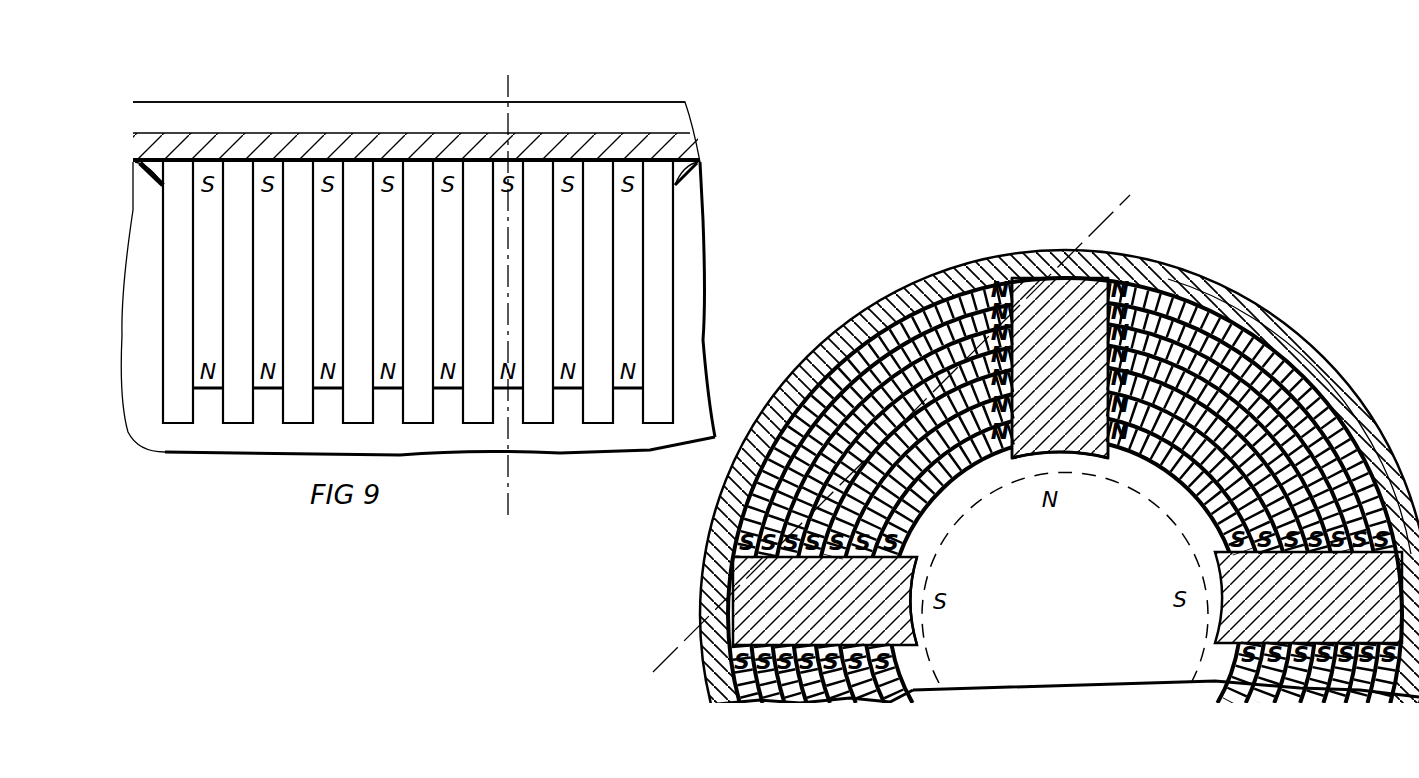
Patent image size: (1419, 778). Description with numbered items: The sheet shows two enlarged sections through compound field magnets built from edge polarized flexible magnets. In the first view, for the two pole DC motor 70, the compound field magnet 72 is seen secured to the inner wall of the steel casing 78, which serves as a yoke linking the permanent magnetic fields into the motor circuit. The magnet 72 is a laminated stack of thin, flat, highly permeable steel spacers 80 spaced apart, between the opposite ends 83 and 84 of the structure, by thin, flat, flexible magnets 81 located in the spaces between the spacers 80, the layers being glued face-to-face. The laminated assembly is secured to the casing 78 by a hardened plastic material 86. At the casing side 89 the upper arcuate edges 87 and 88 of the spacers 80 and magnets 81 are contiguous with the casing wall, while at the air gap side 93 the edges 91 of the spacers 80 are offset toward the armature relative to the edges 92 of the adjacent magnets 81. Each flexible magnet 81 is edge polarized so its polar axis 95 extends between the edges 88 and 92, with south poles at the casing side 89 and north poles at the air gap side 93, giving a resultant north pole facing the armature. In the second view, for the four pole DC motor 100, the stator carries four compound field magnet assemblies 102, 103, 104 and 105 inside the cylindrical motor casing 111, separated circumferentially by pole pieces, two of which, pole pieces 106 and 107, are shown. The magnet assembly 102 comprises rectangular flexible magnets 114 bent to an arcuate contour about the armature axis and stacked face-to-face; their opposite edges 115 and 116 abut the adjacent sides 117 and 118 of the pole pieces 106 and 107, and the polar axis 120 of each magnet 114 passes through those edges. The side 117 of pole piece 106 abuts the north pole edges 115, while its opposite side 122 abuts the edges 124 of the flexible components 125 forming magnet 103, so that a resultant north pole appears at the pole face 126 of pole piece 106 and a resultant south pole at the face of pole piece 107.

In FIG. 9, the two pole DC motor 70 is at (548, 102).
In FIG. 9, the compound field magnet 72 is at (674, 211).
In FIG. 9, the casing 78 is at (355, 102).
In FIG. 9, the spacers 80 is at (482, 423).
In FIG. 9, the flexible magnets 81 is at (627, 390).
In FIG. 9, the end 83 is at (163, 345).
In FIG. 9, the end 84 is at (674, 315).
In FIG. 9, the hardened plastic material 86 is at (152, 175).
In FIG. 9, the upper arcuate edge 87 is at (247, 161).
In FIG. 9, the upper arcuate edge 88 is at (340, 161).
In FIG. 9, the casing side 89 is at (398, 160).
In FIG. 9, the edge 91 is at (298, 425).
In FIG. 9, the edge 92 is at (393, 390).
In FIG. 9, the air gap side 93 is at (655, 423).
In FIG. 9, the polar axis 95 is at (512, 283).
In FIG. 12, the four pole DC motor 100 is at (1300, 328).
In FIG. 12, the compound field magnet assembly 102 is at (918, 520).
In FIG. 12, the compound field magnet assembly 103 is at (1195, 498).
In FIG. 12, the compound field magnet assembly 104 is at (1214, 665).
In FIG. 12, the compound field magnet assembly 105 is at (915, 672).
In FIG. 12, the pole piece 106 is at (993, 476).
In FIG. 12, the pole piece 107 is at (932, 600).
In FIG. 12, the motor casing 111 is at (1178, 268).
In FIG. 12, the flexible magnets 114 is at (726, 522).
In FIG. 12, the edge 115 is at (1043, 252).
In FIG. 12, the edge 116 is at (712, 578).
In FIG. 12, the side 117 is at (1008, 460).
In FIG. 12, the side 118 is at (908, 556).
In FIG. 12, the polar axis 120 is at (696, 630).
In FIG. 12, the opposite side 122 is at (1108, 455).
In FIG. 12, the edges 124 is at (1090, 460).
In FIG. 12, the flexible components 125 is at (1248, 300).
In FIG. 12, the pole face 126 is at (1052, 460).